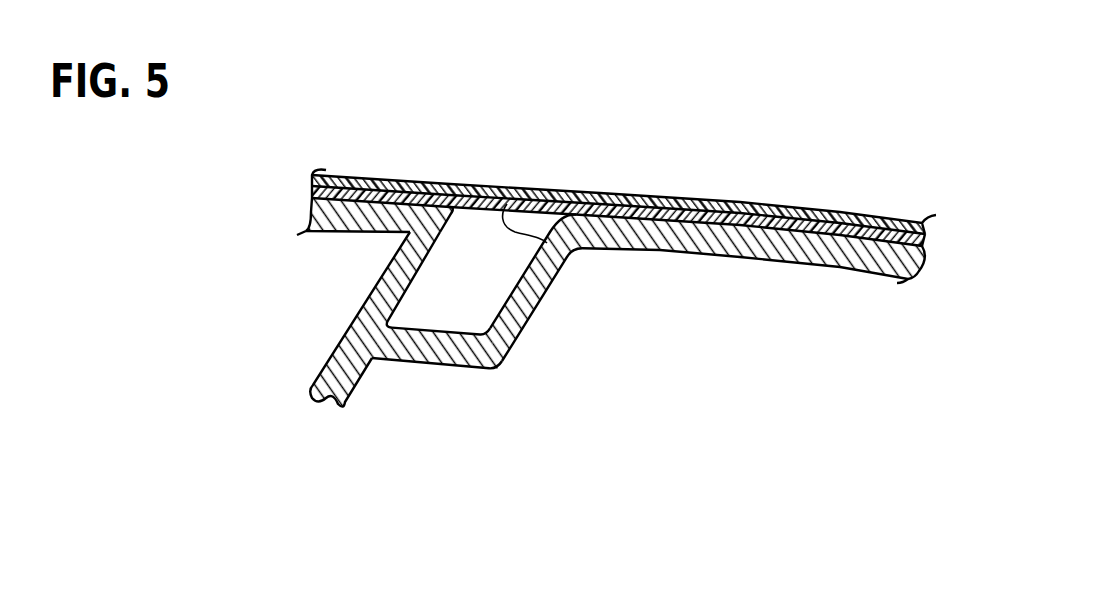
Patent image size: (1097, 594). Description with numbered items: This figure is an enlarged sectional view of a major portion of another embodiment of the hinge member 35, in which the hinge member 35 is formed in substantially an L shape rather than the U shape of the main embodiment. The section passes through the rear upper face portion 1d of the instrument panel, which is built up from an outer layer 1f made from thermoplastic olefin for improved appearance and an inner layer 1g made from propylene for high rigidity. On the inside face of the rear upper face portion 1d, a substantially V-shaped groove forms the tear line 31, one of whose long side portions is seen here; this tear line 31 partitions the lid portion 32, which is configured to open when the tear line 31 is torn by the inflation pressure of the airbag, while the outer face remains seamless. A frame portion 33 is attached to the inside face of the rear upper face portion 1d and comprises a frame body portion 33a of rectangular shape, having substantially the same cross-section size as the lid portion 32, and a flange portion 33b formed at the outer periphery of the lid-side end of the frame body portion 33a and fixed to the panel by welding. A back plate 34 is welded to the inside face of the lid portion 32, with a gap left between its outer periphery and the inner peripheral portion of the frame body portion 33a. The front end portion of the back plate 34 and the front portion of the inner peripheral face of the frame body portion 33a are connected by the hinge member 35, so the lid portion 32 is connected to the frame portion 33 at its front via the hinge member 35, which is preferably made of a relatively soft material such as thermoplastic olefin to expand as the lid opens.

The rear upper face portion 1d is at (397, 182).
The outer layer 1f is at (547, 195).
The inner layer 1g is at (624, 207).
The lid portion 32 is at (624, 159).
The frame portion 33 is at (279, 288).
The frame body portion 33a is at (367, 305).
The flange portion 33b is at (347, 232).
The tear line 31 is at (566, 259).
The back plate 34 is at (830, 267).
The hinge member 35 is at (513, 348).